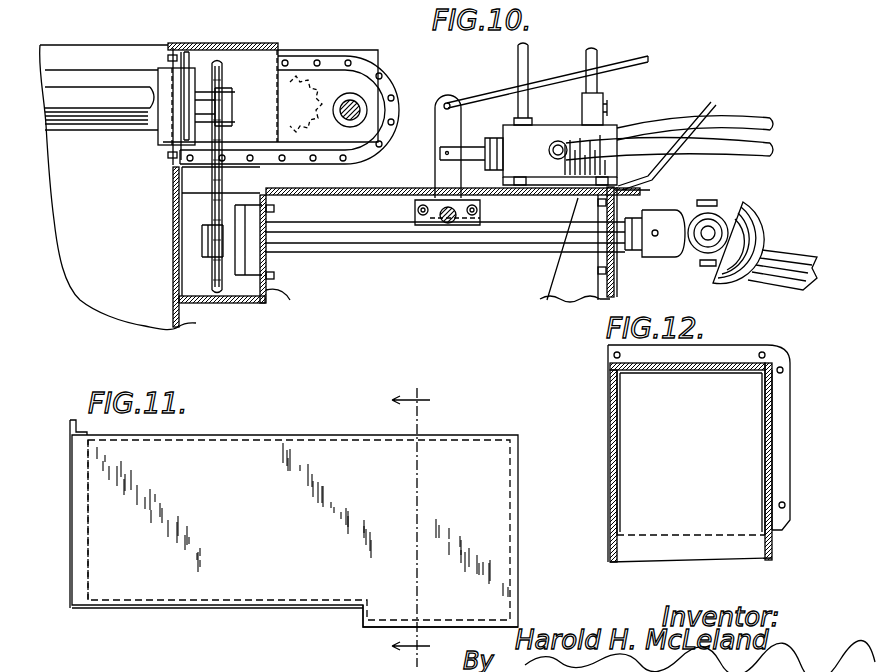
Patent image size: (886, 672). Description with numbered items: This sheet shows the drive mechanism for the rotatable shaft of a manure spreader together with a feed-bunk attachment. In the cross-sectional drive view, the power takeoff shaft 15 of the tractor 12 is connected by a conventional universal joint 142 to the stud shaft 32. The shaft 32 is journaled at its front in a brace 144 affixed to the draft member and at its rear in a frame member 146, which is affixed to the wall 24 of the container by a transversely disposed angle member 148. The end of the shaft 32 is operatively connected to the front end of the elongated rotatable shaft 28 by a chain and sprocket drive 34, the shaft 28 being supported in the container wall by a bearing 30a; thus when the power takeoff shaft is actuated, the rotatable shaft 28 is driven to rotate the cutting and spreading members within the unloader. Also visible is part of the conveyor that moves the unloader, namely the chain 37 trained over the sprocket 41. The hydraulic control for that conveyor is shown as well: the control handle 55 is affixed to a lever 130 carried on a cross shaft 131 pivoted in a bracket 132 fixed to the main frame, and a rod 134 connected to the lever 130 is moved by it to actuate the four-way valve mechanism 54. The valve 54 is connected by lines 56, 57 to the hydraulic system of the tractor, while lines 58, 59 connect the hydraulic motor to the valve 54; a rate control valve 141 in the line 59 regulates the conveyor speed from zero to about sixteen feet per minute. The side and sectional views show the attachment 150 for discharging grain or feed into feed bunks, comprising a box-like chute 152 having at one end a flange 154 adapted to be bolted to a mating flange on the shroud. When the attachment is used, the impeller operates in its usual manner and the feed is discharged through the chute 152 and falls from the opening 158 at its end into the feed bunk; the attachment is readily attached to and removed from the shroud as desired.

In FIG. 10, the power takeoff shaft 15 is at (755, 226).
In FIG. 10, the wall 24 is at (172, 246).
In FIG. 10, the rotatable shaft 28 is at (116, 132).
In FIG. 10, the bearing 30a is at (163, 128).
In FIG. 10, the stud shaft 32 is at (357, 244).
In FIG. 10, the chain and sprocket drive 34 is at (224, 187).
In FIG. 10, the chain 37 is at (393, 78).
In FIG. 10, the sprocket 41 is at (386, 110).
In FIG. 10, the four-way valve mechanism 54 is at (605, 124).
In FIG. 10, the control handle 55 is at (477, 98).
In FIG. 10, the line 56 is at (745, 155).
In FIG. 10, the line 57 is at (741, 118).
In FIG. 10, the line 58 is at (526, 66).
In FIG. 10, the line 59 is at (596, 54).
In FIG. 10, the lever 130 is at (442, 123).
In FIG. 10, the cross shaft 131 is at (442, 228).
In FIG. 10, the bracket 132 is at (463, 228).
In FIG. 10, the rod 134 is at (468, 147).
In FIG. 10, the rate control valve 141 is at (583, 110).
In FIG. 10, the universal joint 142 is at (700, 202).
In FIG. 10, the brace 144 is at (556, 302).
In FIG. 10, the frame member 146 is at (291, 307).
In FIG. 10, the angle member 148 is at (210, 330).
In FIG. 11, the attachment 150 is at (311, 416).
In FIG. 12, the attachment 150 is at (576, 401).
In FIG. 11, the box-like chute 152 is at (195, 588).
In FIG. 12, the box-like chute 152 is at (770, 440).
In FIG. 11, the flange 154 is at (70, 503).
In FIG. 12, the flange 154 is at (783, 383).
In FIG. 11, the opening 158 is at (380, 627).
In FIG. 12, the opening 158 is at (667, 557).
In FIG. 11, the tractor 12 is at (447, 522).